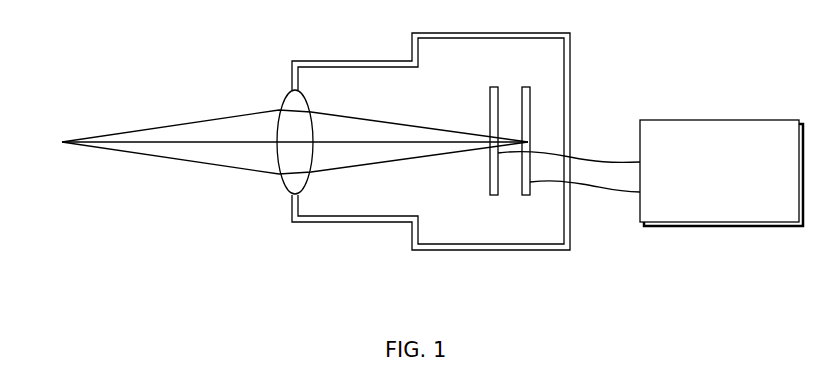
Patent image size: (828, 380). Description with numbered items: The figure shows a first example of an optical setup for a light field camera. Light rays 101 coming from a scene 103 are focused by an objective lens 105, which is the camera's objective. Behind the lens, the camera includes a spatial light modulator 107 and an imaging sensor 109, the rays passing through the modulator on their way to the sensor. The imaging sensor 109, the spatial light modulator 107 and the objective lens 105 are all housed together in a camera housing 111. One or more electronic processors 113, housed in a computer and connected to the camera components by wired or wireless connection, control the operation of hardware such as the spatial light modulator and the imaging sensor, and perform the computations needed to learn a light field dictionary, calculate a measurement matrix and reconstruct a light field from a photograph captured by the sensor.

The light rays 101 is at (165, 118).
The scene 103 is at (43, 117).
The objective lens 105 is at (283, 188).
The spatial light modulator 107 is at (490, 176).
The imaging sensor 109 is at (522, 184).
The camera housing 111 is at (572, 70).
The electronic processor 113 is at (705, 193).